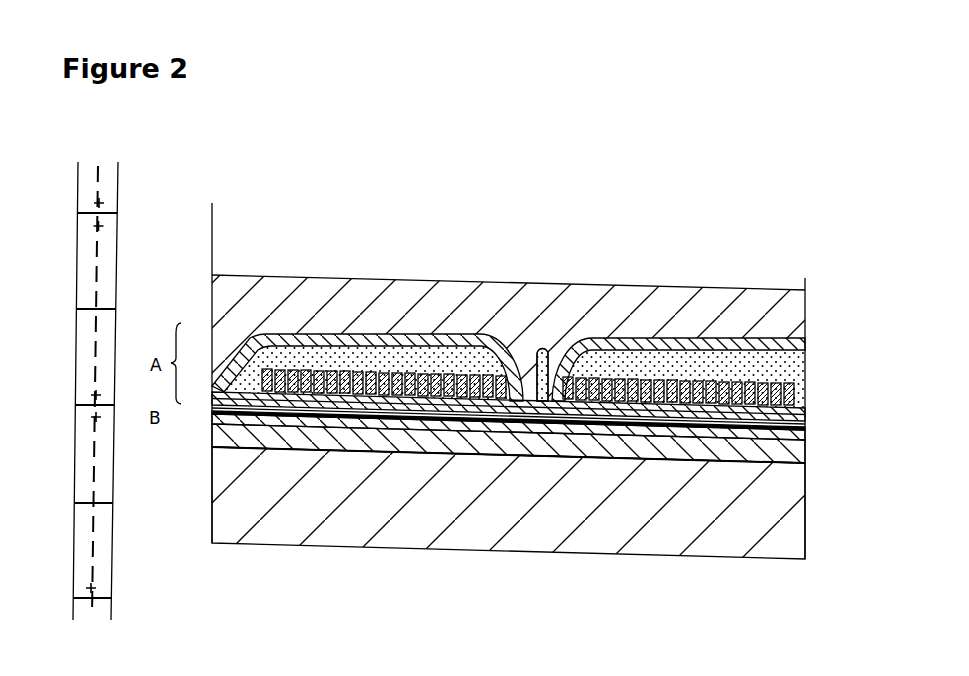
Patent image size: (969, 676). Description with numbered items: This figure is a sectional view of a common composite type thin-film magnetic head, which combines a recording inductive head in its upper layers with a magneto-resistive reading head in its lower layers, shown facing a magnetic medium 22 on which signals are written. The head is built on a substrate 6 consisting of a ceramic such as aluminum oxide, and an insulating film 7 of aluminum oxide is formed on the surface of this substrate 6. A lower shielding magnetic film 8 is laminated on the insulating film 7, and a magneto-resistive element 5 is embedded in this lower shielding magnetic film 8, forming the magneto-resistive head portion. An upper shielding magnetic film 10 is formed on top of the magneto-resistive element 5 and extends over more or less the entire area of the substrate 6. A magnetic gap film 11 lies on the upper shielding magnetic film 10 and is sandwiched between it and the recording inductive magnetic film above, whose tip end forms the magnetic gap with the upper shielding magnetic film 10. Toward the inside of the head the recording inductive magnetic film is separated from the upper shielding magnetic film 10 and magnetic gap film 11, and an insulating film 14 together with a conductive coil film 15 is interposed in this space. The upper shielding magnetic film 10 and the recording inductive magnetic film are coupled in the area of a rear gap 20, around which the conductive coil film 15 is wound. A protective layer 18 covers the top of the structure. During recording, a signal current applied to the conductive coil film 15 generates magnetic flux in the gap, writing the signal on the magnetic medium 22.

The magnetic medium 22 is at (92, 243).
The protective layer 18 is at (278, 292).
The conductive coil film 15 is at (400, 368).
The rear gap 20 is at (537, 348).
The insulating film 14 is at (233, 370).
The magnetic gap film 11 is at (224, 386).
The upper shielding magnetic film 10 is at (216, 398).
The magneto-resistive element 5 is at (214, 412).
The lower shielding magnetic film 8 is at (215, 430).
The insulating film 7 is at (212, 448).
The substrate 6 is at (218, 518).